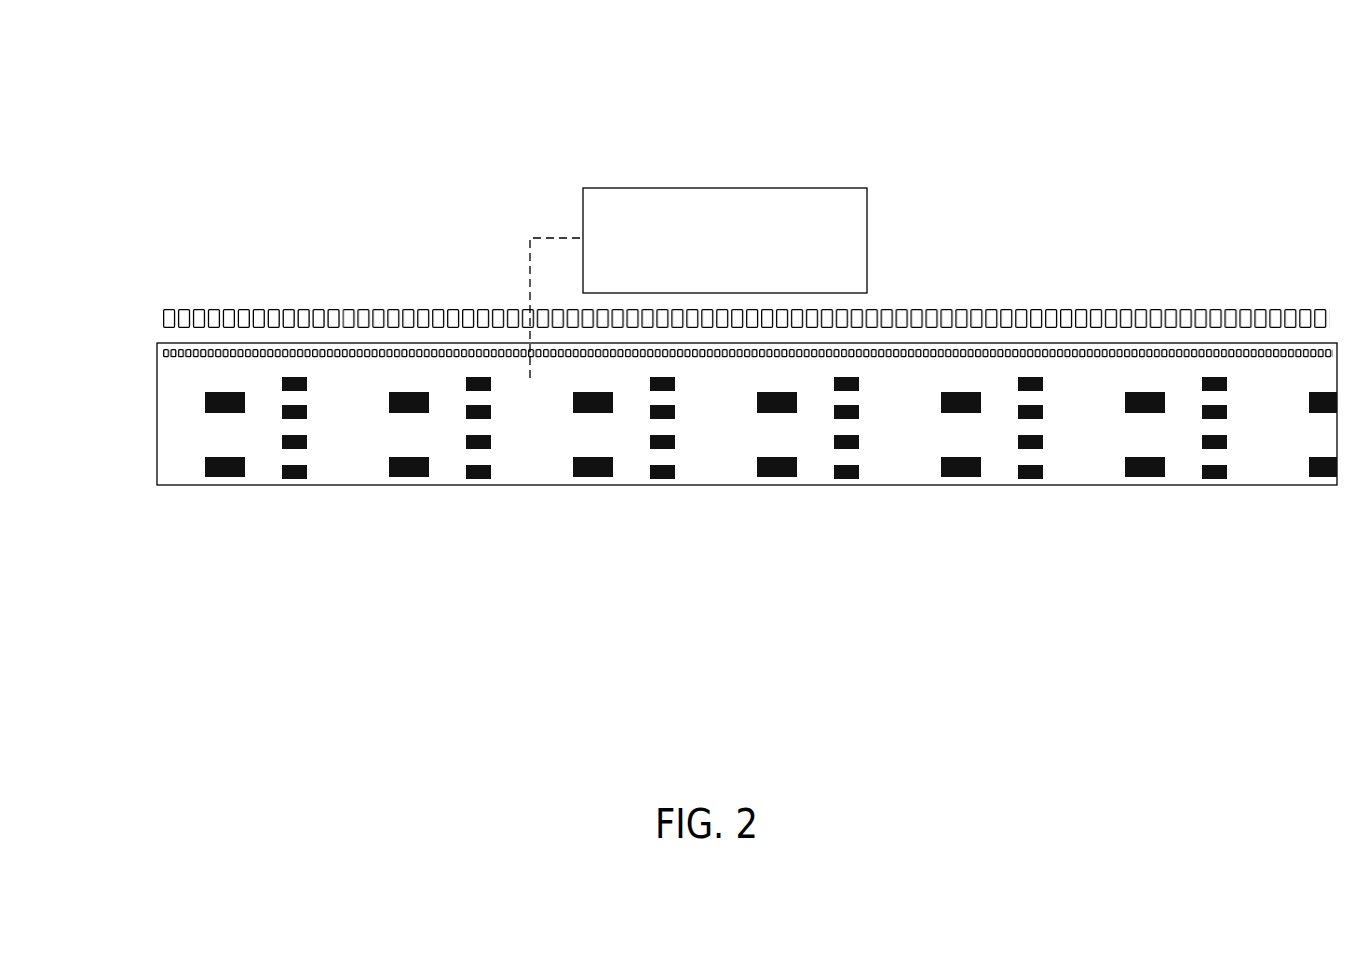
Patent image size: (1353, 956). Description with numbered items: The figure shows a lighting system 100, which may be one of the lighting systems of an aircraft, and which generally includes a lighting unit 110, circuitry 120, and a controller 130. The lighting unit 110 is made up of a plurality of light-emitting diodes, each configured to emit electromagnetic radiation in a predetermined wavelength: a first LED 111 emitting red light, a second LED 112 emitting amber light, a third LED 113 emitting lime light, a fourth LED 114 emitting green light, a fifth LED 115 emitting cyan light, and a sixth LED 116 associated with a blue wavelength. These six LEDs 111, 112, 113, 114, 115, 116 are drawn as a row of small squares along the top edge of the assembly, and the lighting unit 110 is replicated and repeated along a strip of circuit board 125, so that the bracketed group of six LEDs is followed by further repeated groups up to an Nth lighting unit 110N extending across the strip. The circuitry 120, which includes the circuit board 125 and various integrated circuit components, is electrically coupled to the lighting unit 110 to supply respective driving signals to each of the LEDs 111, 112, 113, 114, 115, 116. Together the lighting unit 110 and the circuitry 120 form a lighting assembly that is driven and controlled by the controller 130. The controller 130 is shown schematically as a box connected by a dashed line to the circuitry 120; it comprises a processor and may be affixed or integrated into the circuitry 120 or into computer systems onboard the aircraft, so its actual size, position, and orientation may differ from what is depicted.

The lighting system 100 is at (287, 103).
The lighting unit 110 is at (252, 304).
The Nth light source group 110N is at (342, 304).
The first LED 111 is at (166, 318).
The second LED 112 is at (183, 328).
The third LED 113 is at (200, 328).
The fourth LED 114 is at (217, 328).
The fifth LED 115 is at (233, 328).
The sixth LED 116 is at (247, 328).
The circuitry 120 is at (267, 506).
The circuit board 125 is at (527, 443).
The controller 130 is at (698, 283).